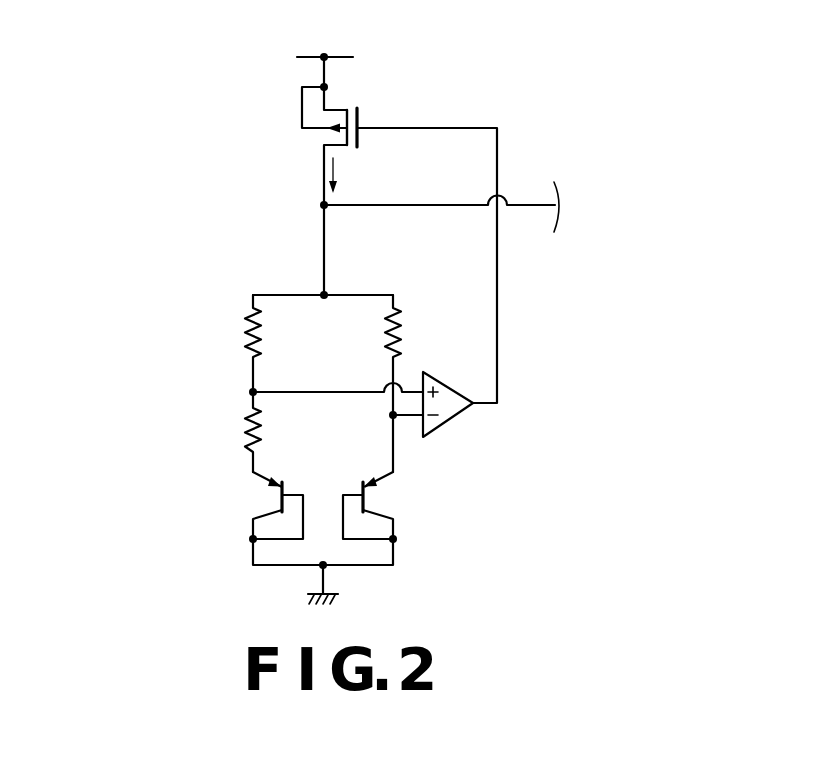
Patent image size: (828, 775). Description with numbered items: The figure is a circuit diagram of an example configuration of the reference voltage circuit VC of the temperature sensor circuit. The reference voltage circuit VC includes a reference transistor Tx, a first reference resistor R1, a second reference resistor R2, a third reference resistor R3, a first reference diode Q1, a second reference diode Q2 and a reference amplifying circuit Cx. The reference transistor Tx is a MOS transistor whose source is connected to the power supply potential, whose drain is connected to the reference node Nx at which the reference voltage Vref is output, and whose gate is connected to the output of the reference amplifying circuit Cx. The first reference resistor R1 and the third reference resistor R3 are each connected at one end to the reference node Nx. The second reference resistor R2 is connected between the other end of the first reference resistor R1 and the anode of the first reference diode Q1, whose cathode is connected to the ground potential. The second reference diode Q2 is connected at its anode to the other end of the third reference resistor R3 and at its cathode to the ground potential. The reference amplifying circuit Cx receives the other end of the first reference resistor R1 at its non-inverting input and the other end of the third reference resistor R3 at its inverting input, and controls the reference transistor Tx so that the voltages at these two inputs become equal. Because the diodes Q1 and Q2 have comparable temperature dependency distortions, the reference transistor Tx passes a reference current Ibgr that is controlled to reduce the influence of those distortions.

The reference voltage circuit VC is at (234, 49).
The reference transistor Tx is at (338, 108).
The reference current Ibgr is at (361, 175).
The reference voltage Vref is at (441, 204).
The reference node Nx is at (322, 205).
The first reference resistor R1 is at (248, 325).
The second reference resistor R2 is at (247, 425).
The third reference resistor R3 is at (402, 332).
The first reference diode Q1 is at (266, 477).
The second reference diode Q2 is at (379, 477).
The reference amplifying circuit Cx is at (453, 418).